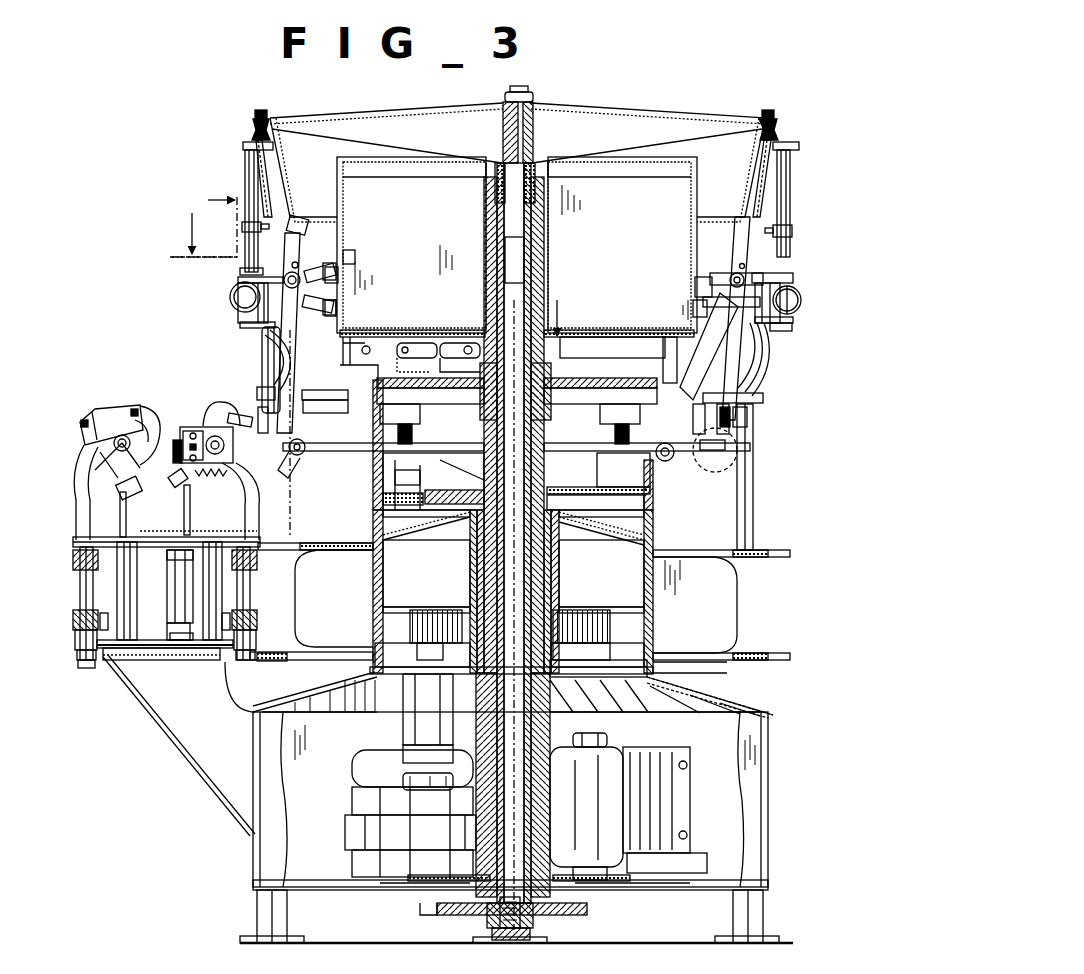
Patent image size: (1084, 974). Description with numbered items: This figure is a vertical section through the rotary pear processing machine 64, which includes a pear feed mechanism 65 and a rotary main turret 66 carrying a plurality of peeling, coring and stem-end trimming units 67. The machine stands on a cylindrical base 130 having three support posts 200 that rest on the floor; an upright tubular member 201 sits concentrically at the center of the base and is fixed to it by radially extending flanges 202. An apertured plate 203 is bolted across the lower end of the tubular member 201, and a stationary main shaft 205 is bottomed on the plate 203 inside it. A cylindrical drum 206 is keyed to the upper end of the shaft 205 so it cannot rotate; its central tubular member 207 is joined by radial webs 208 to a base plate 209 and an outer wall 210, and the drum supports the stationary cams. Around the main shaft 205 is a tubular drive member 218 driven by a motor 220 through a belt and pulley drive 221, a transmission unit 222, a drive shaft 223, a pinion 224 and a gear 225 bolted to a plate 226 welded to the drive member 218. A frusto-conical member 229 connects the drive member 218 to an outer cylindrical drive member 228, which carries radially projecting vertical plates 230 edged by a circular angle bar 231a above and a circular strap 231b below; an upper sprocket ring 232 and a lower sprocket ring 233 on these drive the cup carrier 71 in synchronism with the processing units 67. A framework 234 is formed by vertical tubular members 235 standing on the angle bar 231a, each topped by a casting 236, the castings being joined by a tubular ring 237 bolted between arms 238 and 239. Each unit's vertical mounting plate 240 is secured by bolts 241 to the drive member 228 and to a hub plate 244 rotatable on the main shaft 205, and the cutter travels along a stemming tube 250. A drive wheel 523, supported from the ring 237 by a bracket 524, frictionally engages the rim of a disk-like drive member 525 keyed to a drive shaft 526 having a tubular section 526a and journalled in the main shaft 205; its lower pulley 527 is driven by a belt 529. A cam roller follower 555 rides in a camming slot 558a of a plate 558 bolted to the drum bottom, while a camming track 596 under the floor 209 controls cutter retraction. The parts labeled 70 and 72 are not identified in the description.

The rotary pear processing machine 64 is at (185, 135).
The pear feed mechanism 65 is at (160, 395).
The rotary main turret 66 is at (208, 209).
The peeling, coring and stem-end trimming unit 67 is at (222, 378).
The clamp brackets 70 is at (123, 395).
The cup carrier 71 is at (98, 668).
The cylinder frame 72 is at (233, 497).
The cylindrical base 130 is at (256, 838).
The support posts 200 is at (280, 922).
The upright tubular member 201 is at (550, 728).
The radially extending flanges 202 is at (333, 778).
The apertured plate 203 is at (543, 917).
The main shaft 205 is at (524, 253).
The cylindrical drum 206 is at (347, 214).
The central tubular member 207 is at (493, 190).
The radial webs 208 is at (517, 245).
The base plate 209 is at (597, 330).
The outer wall 210 is at (350, 259).
The tubular drive member 218 is at (562, 568).
The motor 220 is at (628, 806).
The belt and pulley drive 221 is at (395, 893).
The transmission unit 222 is at (410, 775).
The drive shaft 223 is at (415, 773).
The pinion 224 is at (378, 648).
The gear 225 is at (620, 610).
The plate 226 is at (430, 610).
The outer cylindrical drive member 228 is at (654, 593).
The frusto-conical member 229 is at (566, 525).
The vertical plates 230 is at (365, 597).
The circular angle bar 231a is at (278, 538).
The circular strap 231b is at (310, 652).
The upper sprocket ring 232 is at (316, 584).
The lower sprocket ring 233 is at (775, 650).
The framework 234 is at (262, 346).
The vertical tubular members 235 is at (754, 501).
The casting 236 is at (777, 330).
The tubular ring 237 is at (230, 300).
The arm 238 is at (240, 288).
The arm 239 is at (238, 316).
The vertical mounting plate 240 is at (380, 515).
The bolts 241 is at (380, 504).
The hub plate 244 is at (583, 380).
The stemming tube 250 is at (297, 440).
The drive wheel 523 is at (258, 128).
The bracket 524 is at (246, 189).
The disk-like drive member 525 is at (430, 94).
The drive shaft 526 is at (516, 92).
The tubular section 526a is at (526, 283).
The pulley 527 is at (580, 912).
The belt 529 is at (437, 907).
The cam roller follower 555 is at (630, 325).
The plate 558 is at (405, 333).
The camming slot 558a is at (462, 324).
The camming track 596 is at (388, 306).